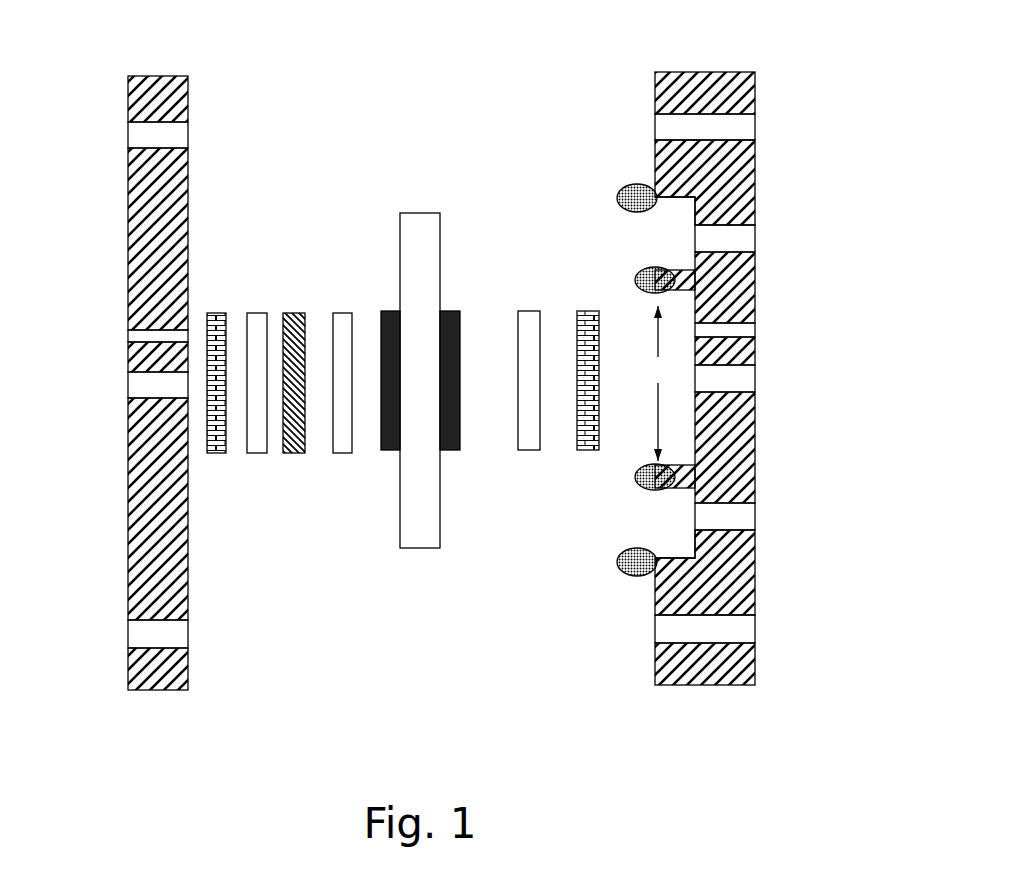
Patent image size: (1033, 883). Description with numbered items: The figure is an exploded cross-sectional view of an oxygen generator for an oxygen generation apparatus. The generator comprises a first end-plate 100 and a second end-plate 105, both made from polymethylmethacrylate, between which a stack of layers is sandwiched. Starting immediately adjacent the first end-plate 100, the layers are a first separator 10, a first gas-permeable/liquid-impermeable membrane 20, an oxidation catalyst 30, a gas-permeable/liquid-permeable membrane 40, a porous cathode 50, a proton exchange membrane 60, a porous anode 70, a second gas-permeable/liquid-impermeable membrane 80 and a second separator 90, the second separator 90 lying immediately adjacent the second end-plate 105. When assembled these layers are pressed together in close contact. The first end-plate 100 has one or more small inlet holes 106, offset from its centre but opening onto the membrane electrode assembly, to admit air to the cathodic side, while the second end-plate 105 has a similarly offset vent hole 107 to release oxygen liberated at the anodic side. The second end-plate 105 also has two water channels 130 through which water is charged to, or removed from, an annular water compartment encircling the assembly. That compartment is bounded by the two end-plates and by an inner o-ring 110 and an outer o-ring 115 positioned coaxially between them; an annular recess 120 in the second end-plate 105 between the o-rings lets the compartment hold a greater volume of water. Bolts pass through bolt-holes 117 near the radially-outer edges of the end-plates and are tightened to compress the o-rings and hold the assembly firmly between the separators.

The first separator 10 is at (215, 309).
The first gas-permeable/liquid-impermeable membrane 20 is at (258, 456).
The oxidation catalyst 30 is at (291, 309).
The gas-permeable/liquid-permeable membrane 40 is at (343, 456).
The porous cathode 50 is at (385, 306).
The proton exchange membrane 60 is at (420, 209).
The porous anode 70 is at (453, 306).
The second gas-permeable/liquid-impermeable membrane 80 is at (527, 306).
The second separator 90 is at (590, 306).
The first end-plate 100 is at (127, 247).
The second end-plate 105 is at (760, 288).
The inlet holes 106 is at (137, 337).
The vent hole 107 is at (743, 329).
The inner o-ring 110 is at (660, 383).
The outer o-ring 115 is at (622, 186).
The bolt-holes 117 is at (147, 138).
The annular recess 120 is at (668, 230).
The water channels 130 is at (735, 240).